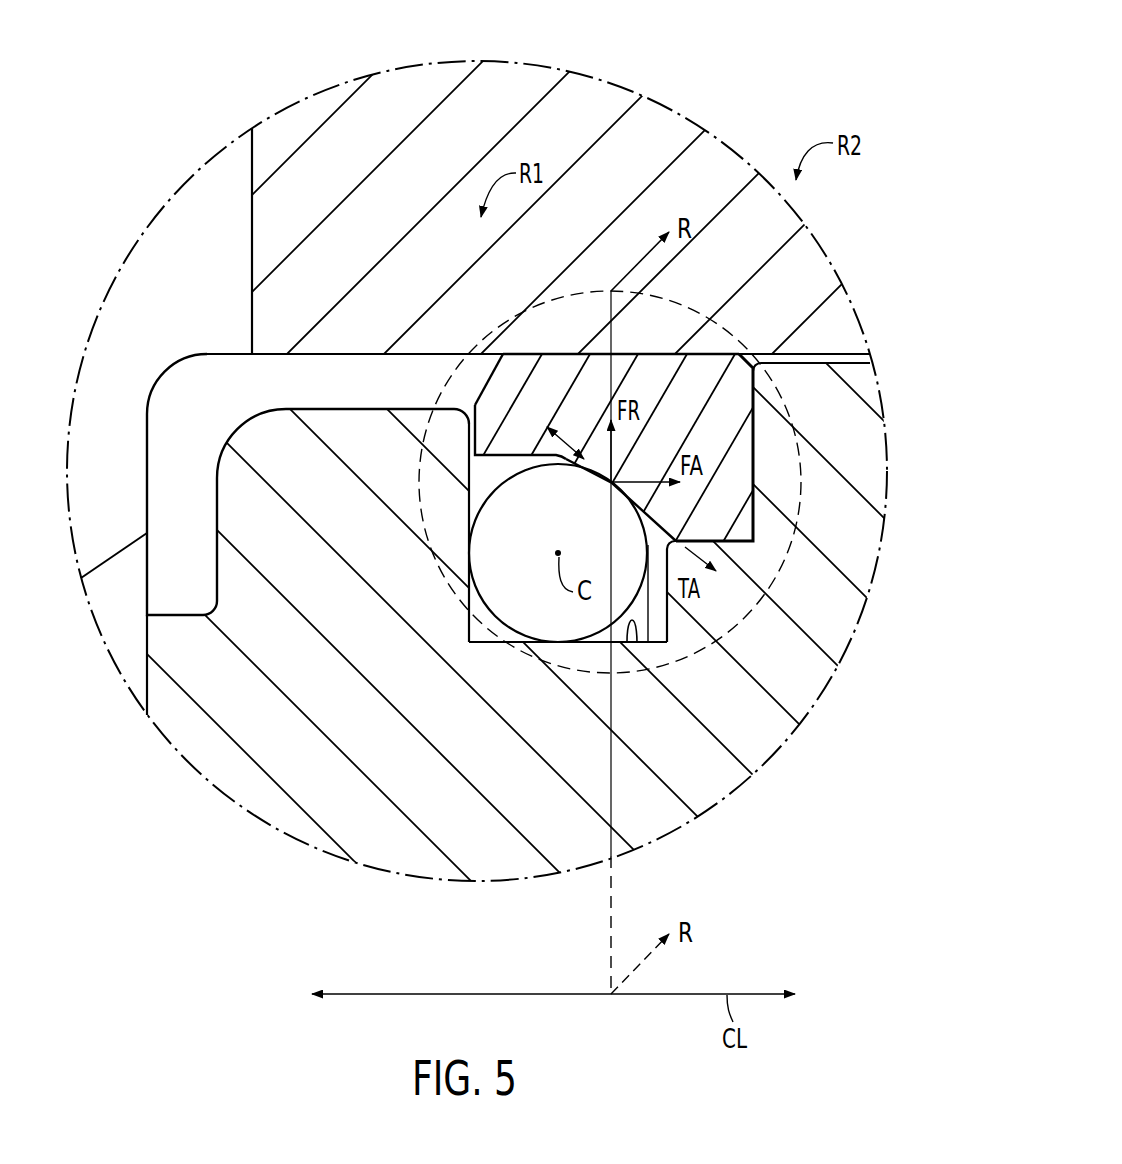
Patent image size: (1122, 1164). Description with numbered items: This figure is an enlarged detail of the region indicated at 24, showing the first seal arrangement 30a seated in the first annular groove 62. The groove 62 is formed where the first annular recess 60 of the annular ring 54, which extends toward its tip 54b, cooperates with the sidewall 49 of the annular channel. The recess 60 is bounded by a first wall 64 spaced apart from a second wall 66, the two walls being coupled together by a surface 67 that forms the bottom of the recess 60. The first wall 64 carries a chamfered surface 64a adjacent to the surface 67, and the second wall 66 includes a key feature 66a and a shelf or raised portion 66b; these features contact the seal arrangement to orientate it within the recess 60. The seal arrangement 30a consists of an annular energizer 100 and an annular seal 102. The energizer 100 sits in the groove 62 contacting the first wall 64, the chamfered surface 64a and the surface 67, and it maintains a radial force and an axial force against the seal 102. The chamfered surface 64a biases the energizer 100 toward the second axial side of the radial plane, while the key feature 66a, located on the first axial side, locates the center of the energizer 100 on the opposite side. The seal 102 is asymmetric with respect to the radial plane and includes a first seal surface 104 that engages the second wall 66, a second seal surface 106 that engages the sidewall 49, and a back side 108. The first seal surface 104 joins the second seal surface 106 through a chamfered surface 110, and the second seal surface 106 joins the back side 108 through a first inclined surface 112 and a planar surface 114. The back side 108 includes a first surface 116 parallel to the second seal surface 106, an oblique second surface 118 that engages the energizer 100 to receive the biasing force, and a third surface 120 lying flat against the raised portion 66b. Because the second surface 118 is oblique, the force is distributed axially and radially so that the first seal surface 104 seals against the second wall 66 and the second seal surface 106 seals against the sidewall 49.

The bearing assembly 24 is at (738, 68).
The first seal arrangement 30a is at (760, 290).
The sidewall 49 is at (333, 350).
The annular ring 54 is at (832, 350).
The tip 54b is at (147, 681).
The first annular recess 60 is at (459, 392).
The first annular groove 62 is at (830, 698).
The first wall 64 is at (461, 533).
The chamfered surface 64a is at (470, 612).
The second wall 66 is at (760, 463).
The key feature 66a is at (650, 642).
The raised portion 66b is at (740, 545).
The surface 67 is at (637, 645).
The annular energizer 100 is at (555, 623).
The annular seal 102 is at (638, 394).
The first seal surface 104 is at (756, 430).
The second seal surface 106 is at (672, 354).
The back side 108 is at (495, 468).
The chamfered surface 110 is at (752, 352).
The first inclined surface 112 is at (488, 377).
The planar surface 114 is at (472, 430).
The first surface 116 is at (517, 456).
The second surface 118 is at (664, 522).
The third surface 120 is at (735, 543).